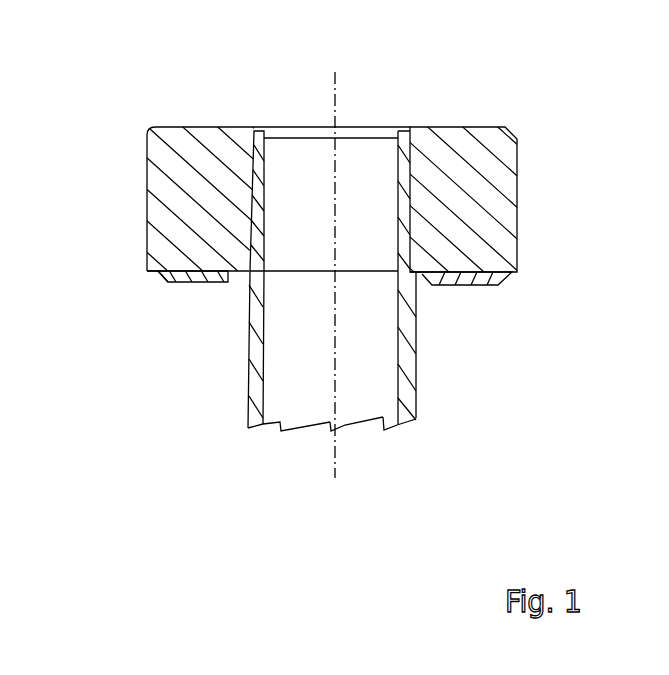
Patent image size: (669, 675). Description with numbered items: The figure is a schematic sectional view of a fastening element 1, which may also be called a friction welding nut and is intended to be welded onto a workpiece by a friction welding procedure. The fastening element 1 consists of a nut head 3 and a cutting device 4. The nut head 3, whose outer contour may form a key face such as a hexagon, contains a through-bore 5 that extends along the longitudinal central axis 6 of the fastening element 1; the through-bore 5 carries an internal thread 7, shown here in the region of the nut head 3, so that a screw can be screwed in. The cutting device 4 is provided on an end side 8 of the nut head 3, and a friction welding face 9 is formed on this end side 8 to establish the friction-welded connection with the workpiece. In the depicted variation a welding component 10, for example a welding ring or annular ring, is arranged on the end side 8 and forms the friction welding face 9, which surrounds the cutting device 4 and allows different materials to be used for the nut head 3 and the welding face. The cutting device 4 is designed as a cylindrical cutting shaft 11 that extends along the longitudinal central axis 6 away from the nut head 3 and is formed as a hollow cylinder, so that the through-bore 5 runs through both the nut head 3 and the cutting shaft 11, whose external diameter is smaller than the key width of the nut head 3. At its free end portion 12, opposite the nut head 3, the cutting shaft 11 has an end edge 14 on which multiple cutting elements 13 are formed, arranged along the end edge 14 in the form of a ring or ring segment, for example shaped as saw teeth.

The fastening element 1 is at (542, 102).
The nut head 3 is at (517, 205).
The cutting device 4 is at (217, 381).
The through-bore 5 is at (306, 105).
The longitudinal central axis 6 is at (338, 103).
The internal thread 7 is at (266, 167).
The end side 8 is at (157, 273).
The friction welding face 9 is at (192, 283).
The welding component 10 is at (493, 283).
The cutting shaft 11 is at (418, 373).
The end portion 12 is at (283, 448).
The cutting elements 13 is at (348, 425).
The end edge 14 is at (407, 418).